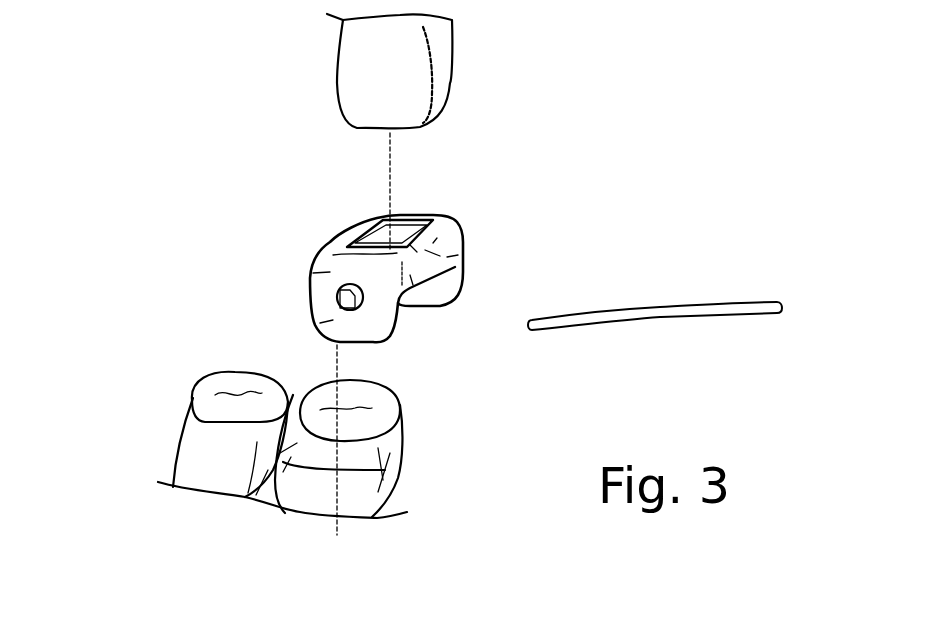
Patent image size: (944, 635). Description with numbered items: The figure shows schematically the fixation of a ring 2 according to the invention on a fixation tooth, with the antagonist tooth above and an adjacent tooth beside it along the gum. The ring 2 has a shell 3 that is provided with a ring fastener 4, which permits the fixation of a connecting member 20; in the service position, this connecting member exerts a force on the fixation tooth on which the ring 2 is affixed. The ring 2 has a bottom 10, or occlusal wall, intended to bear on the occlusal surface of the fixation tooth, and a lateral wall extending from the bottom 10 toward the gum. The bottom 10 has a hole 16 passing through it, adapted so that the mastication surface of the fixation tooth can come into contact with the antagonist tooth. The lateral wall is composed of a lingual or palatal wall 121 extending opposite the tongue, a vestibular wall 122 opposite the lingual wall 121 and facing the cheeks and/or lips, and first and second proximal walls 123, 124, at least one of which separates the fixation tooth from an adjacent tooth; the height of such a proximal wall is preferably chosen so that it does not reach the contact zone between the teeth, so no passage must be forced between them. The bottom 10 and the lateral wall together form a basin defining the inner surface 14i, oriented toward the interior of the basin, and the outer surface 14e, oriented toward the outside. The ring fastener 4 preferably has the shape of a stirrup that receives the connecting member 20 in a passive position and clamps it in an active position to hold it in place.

The ring 2 is at (519, 204).
The shell 3 is at (335, 238).
The ring fastener 4 is at (337, 298).
The bottom 10 is at (443, 220).
The hole 16 is at (402, 222).
The lingual or palatal wall 121 is at (463, 248).
The vestibular wall 122 is at (311, 331).
The first proximal wall 123 is at (423, 308).
The second proximal wall 124 is at (310, 273).
The inner surface 14i is at (438, 284).
The outer surface 14e is at (382, 317).
The connecting member 20 is at (662, 313).